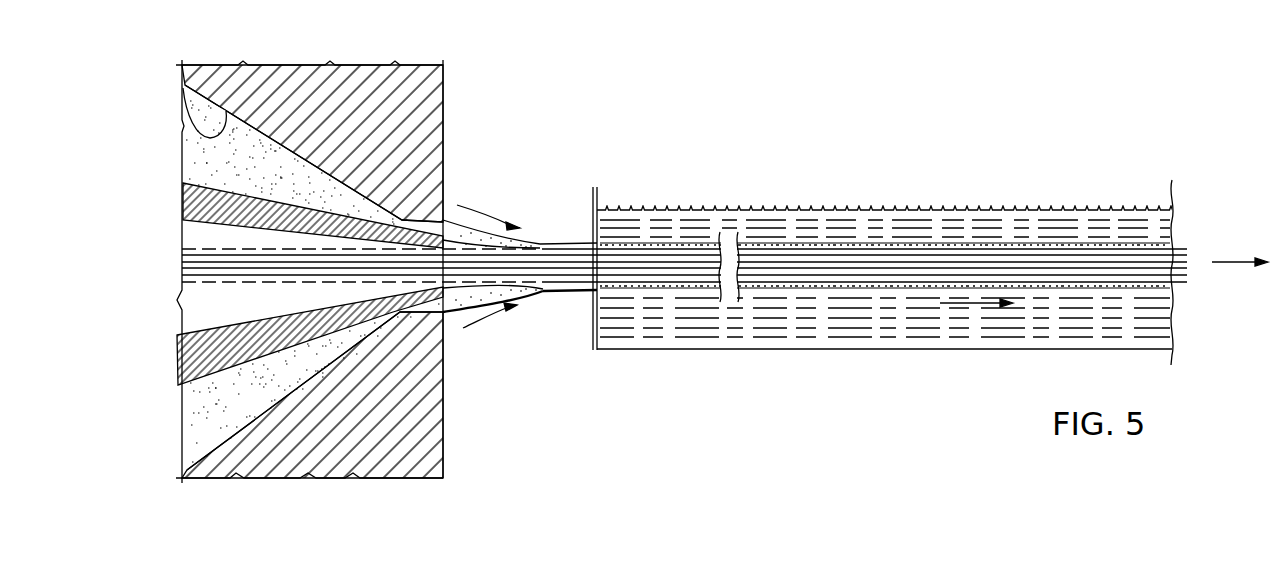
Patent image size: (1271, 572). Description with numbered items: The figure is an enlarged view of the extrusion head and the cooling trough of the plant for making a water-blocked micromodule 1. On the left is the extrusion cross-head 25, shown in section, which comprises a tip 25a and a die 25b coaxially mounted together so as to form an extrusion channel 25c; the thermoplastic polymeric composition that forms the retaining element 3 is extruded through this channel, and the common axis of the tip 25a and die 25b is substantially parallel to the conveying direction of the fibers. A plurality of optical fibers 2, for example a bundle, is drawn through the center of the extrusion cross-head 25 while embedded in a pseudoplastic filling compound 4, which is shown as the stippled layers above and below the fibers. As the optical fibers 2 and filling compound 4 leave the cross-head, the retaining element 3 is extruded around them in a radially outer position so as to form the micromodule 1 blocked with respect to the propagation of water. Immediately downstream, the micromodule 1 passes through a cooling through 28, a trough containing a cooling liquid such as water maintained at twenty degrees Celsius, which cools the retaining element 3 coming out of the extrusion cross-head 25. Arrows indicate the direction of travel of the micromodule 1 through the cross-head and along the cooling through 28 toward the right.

The micromodule 1 is at (560, 242).
The optical fibers 2 is at (182, 272).
The retaining element 3 is at (565, 292).
The pseudoplastic filling compound 4 is at (210, 280).
The extrusion cross-head 25 is at (327, 65).
The tip 25a is at (197, 197).
The die 25b is at (428, 98).
The extrusion channel 25c is at (182, 125).
The cooling through 28 is at (780, 349).